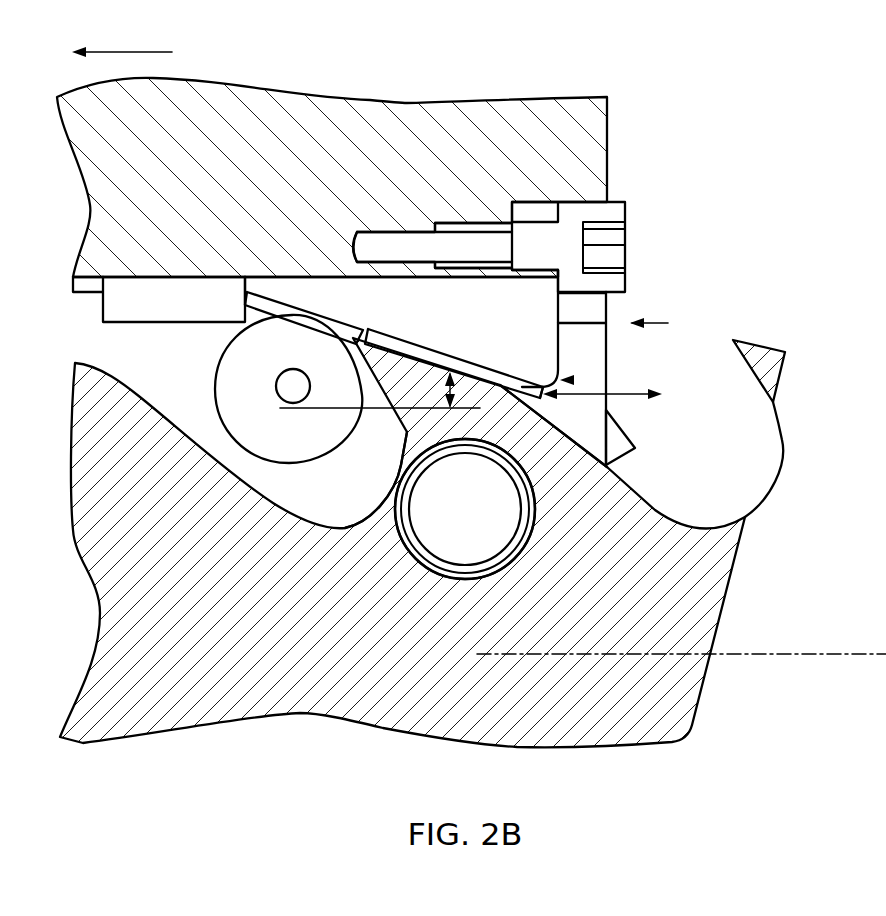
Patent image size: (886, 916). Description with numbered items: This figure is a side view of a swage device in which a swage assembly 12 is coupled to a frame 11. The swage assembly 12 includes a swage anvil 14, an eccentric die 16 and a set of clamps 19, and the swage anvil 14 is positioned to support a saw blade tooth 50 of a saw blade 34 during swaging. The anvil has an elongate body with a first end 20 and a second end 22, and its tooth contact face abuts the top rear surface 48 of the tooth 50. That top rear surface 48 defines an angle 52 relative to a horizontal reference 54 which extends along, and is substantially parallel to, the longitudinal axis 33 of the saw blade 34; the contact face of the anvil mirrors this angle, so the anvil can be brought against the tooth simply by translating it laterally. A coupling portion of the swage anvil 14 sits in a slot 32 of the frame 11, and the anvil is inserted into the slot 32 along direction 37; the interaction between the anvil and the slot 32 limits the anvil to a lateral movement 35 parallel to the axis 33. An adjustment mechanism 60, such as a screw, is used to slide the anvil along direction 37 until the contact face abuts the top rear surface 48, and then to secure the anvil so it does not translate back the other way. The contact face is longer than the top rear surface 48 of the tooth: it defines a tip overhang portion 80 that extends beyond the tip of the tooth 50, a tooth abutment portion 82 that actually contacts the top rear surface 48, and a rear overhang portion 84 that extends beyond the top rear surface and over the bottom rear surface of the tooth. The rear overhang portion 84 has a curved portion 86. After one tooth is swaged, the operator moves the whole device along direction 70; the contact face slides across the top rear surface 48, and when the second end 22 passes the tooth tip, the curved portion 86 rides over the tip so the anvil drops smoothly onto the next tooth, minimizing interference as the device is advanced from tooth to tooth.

The frame 11 is at (610, 130).
The swage assembly 12 is at (640, 240).
The swage anvil 14 is at (560, 312).
The eccentric die 16 is at (205, 407).
The set of clamps 19 is at (517, 553).
The first end 20 is at (278, 256).
The second end 22 is at (565, 242).
The slot 32 is at (128, 303).
The longitudinal axis 33 is at (775, 655).
The saw blade 34 is at (738, 558).
The lateral movement 35 is at (635, 393).
The direction 37 is at (668, 323).
The top rear surface 48 is at (360, 357).
The saw blade tooth 50 is at (392, 430).
The angle 52 is at (545, 410).
The horizontal reference 54 is at (340, 408).
The adjustment mechanism 60 is at (632, 216).
The direction 70 is at (132, 52).
The tip overhang portion 80 is at (307, 313).
The tooth abutment portion 82 is at (438, 342).
The rear overhang portion 84 is at (520, 382).
The curved portion 86 is at (572, 378).